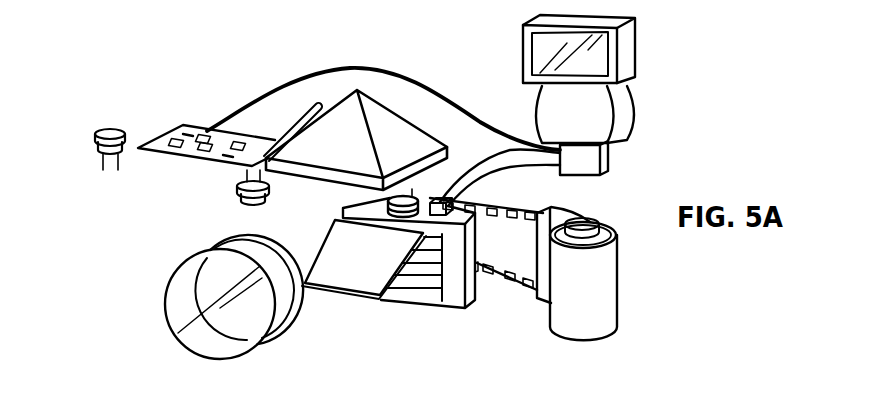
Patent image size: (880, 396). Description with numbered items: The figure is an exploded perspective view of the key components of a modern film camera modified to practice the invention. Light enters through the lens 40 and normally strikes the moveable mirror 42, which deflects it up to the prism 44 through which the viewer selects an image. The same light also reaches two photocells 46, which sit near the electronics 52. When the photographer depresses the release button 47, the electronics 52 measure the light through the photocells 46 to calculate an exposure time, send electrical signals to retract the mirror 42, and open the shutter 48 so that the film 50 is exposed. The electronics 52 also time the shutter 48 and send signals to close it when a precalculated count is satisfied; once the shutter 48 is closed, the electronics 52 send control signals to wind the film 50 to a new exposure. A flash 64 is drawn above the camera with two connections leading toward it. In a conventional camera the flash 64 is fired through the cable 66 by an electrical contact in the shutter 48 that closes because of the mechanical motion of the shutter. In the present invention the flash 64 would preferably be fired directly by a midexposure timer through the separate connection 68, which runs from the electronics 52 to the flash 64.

The lens 40 is at (165, 303).
The moveable mirror 42 is at (334, 300).
The prism 44 is at (385, 106).
The photocells 46 is at (437, 202).
The release button 47 is at (110, 127).
The shutter 48 is at (404, 308).
The film 50 is at (503, 285).
The electronics 52 is at (174, 127).
The flash 64 is at (631, 106).
The cable 66 is at (494, 170).
The connection 68 is at (460, 104).